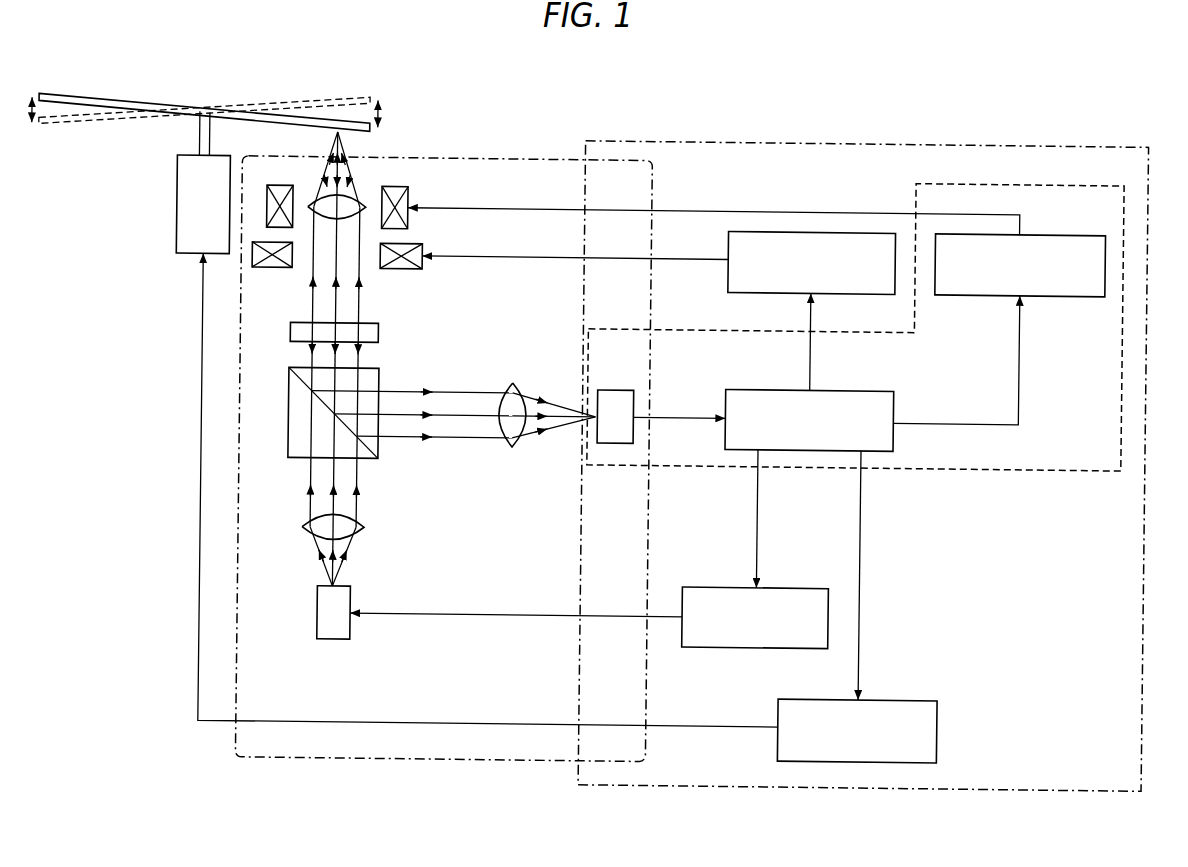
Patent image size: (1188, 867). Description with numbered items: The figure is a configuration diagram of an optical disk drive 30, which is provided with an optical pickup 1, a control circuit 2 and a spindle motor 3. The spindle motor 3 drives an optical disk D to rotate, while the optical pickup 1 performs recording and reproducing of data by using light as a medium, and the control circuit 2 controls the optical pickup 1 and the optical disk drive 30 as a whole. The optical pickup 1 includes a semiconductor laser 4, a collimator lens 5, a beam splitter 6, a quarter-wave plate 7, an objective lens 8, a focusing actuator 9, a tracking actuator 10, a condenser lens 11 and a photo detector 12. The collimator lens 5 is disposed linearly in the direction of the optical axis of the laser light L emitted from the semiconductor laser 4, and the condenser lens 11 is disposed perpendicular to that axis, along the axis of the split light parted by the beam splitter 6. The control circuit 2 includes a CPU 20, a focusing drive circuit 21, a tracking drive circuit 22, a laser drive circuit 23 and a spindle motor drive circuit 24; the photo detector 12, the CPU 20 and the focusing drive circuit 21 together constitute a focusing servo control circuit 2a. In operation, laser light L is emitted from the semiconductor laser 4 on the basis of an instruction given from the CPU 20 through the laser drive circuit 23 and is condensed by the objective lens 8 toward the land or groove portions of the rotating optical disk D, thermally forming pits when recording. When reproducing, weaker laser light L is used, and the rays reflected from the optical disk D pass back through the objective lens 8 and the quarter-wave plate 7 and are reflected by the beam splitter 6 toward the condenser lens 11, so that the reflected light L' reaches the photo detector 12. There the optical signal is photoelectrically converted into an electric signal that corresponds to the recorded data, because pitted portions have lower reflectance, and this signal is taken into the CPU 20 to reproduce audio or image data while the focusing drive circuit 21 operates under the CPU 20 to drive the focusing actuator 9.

The optical disk D is at (140, 104).
The optical pickup 1 is at (483, 159).
The control circuit 2 is at (869, 140).
The focusing servo control circuit 2a is at (992, 468).
The spindle motor 3 is at (174, 210).
The semiconductor laser 4 is at (319, 615).
The collimator lens 5 is at (358, 525).
The beam splitter 6 is at (288, 415).
The quarter-wave plate 7 is at (289, 335).
The objective lens 8 is at (356, 203).
The focusing actuator 9 is at (275, 189).
The tracking actuator 10 is at (271, 272).
The condenser lens 11 is at (516, 390).
The photo detector 12 is at (614, 390).
The CPU 20 is at (852, 388).
The focusing drive circuit 21 is at (1060, 230).
The tracking drive circuit 22 is at (726, 282).
The laser drive circuit 23 is at (795, 586).
The spindle motor drive circuit 24 is at (940, 729).
The optical disk drive 30 is at (1070, 121).
The laser light L is at (358, 577).
The reflected light L' is at (536, 458).